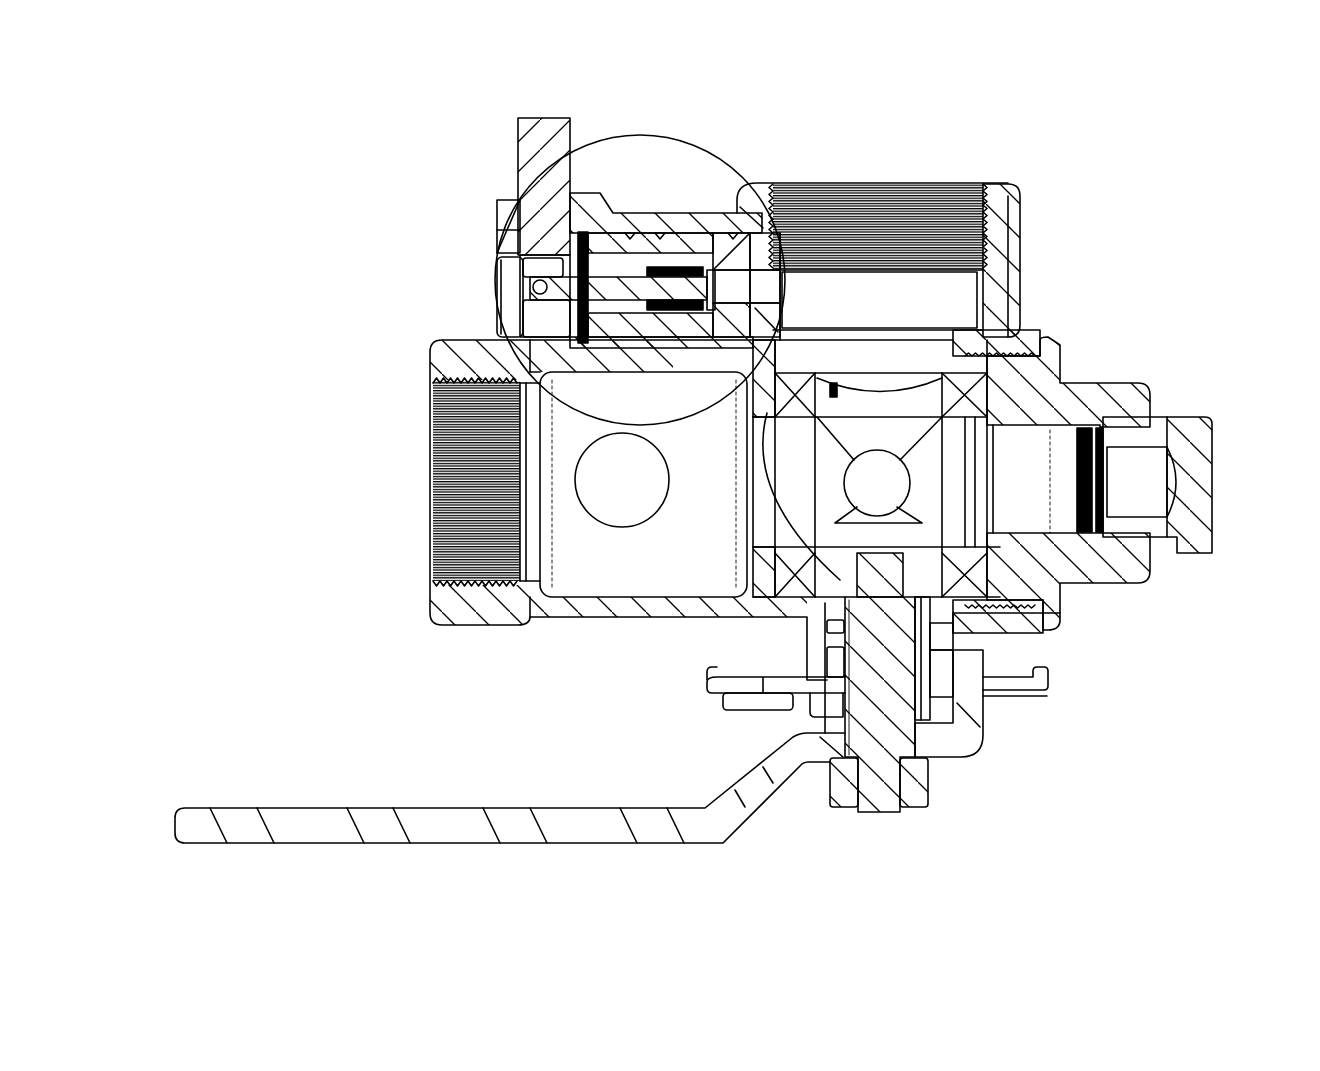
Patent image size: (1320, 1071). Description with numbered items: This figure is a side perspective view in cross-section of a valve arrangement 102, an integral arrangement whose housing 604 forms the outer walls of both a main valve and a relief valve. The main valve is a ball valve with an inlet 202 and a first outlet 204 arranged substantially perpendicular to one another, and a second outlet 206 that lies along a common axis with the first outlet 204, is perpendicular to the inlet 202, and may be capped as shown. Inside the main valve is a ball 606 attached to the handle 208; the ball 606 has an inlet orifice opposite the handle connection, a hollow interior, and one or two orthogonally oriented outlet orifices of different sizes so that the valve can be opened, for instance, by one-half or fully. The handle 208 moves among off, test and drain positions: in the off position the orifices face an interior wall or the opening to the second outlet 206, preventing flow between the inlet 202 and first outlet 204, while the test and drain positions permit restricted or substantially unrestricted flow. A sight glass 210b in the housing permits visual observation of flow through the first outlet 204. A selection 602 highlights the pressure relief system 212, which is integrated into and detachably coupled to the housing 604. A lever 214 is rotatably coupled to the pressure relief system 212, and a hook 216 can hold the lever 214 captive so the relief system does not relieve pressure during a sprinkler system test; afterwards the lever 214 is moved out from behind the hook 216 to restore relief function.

The valve arrangement 102 is at (152, 194).
The inlet 202 is at (887, 165).
The first outlet 204 is at (409, 487).
The second outlet 206 is at (1117, 473).
The handle 208 is at (350, 806).
The sight glass 210b is at (648, 493).
The pressure relief system 212 is at (657, 193).
The lever 214 is at (515, 130).
The hook 216 is at (497, 205).
The selection 602 is at (603, 137).
The housing 604 is at (1020, 330).
The ball 606 is at (890, 495).